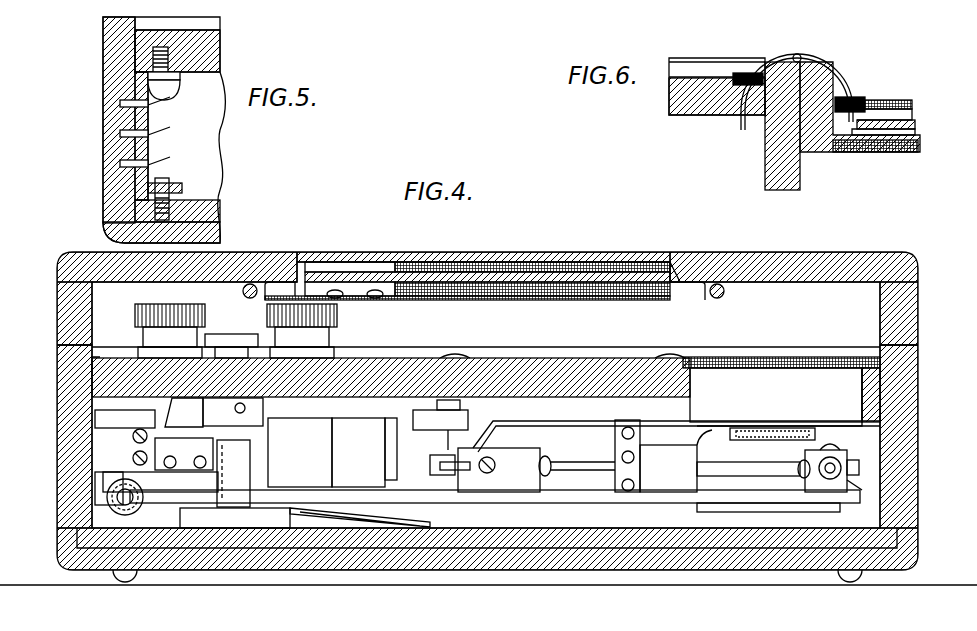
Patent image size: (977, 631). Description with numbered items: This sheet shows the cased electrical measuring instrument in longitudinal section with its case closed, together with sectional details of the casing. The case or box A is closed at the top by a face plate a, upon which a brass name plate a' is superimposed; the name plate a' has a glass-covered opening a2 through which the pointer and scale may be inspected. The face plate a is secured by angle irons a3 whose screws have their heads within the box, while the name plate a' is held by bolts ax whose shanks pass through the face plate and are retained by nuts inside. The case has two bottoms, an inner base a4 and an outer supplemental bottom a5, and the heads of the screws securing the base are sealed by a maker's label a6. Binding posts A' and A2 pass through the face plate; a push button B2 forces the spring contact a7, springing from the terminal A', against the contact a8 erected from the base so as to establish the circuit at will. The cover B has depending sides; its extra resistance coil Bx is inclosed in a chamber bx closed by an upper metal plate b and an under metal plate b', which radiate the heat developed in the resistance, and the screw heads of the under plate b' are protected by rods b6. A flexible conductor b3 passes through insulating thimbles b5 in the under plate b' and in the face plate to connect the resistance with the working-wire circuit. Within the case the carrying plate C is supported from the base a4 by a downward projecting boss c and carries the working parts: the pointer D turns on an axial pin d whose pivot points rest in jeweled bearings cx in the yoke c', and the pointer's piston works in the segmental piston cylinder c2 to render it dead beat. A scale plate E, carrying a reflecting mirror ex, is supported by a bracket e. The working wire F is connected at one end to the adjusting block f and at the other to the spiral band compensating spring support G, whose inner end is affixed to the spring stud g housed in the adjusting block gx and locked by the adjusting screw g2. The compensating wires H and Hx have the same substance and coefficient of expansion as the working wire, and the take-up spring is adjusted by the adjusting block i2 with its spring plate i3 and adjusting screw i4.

In FIG. 5, the case A is at (148, 130).
In FIG. 6, the case A is at (767, 126).
In FIG. 4, the case A is at (488, 457).
In FIG. 4, the binding post A' is at (153, 331).
In FIG. 4, the binding post A2 is at (340, 320).
In FIG. 6, the cover B is at (860, 122).
In FIG. 4, the cover B is at (62, 314).
In FIG. 4, the push button B2 is at (231, 336).
In FIG. 4, the extra resistance coil Bx is at (458, 262).
In FIG. 5, the face plate a is at (192, 58).
In FIG. 6, the face plate a is at (717, 101).
In FIG. 4, the face plate a is at (391, 358).
In FIG. 4, the name plate a' is at (582, 340).
In FIG. 4, the glass-covered opening a2 is at (793, 357).
In FIG. 5, the angle irons a3 is at (148, 147).
In FIG. 4, the angle irons a3 is at (160, 450).
In FIG. 5, the base a4 is at (222, 188).
In FIG. 4, the base a4 is at (316, 536).
In FIG. 5, the supplemental bottom a5 is at (222, 238).
In FIG. 4, the supplemental bottom a5 is at (376, 562).
In FIG. 5, the maker's label a6 is at (222, 220).
In FIG. 4, the maker's label a6 is at (440, 550).
In FIG. 4, the spring contact a7 is at (214, 412).
In FIG. 4, the contact a8 is at (255, 450).
In FIG. 4, the bolts ax is at (452, 357).
In FIG. 6, the upper plate b is at (875, 162).
In FIG. 4, the upper plate b is at (532, 251).
In FIG. 6, the under plate b' is at (886, 100).
In FIG. 6, the flexible conductor b3 is at (796, 42).
In FIG. 6, the insulating thimbles b5 is at (738, 70).
In FIG. 4, the rods b6 is at (243, 292).
In FIG. 6, the chamber bx is at (916, 134).
In FIG. 4, the chamber bx is at (592, 282).
In FIG. 4, the carrying plate C is at (72, 414).
In FIG. 4, the boss c is at (375, 516).
In FIG. 4, the needle housing c' is at (395, 449).
In FIG. 4, the segmental piston cylinder c2 is at (358, 452).
In FIG. 4, the jeweled bearings cx is at (428, 425).
In FIG. 4, the pointer D is at (731, 420).
In FIG. 4, the axial pin d is at (435, 471).
In FIG. 4, the scale plate E is at (831, 427).
In FIG. 4, the bracket e is at (700, 434).
In FIG. 4, the reflecting mirror ex is at (784, 428).
In FIG. 4, the working wire F is at (782, 462).
In FIG. 4, the adjusting block f is at (860, 488).
In FIG. 4, the compensating spring support G is at (78, 518).
In FIG. 4, the spring stud g is at (108, 500).
In FIG. 4, the adjusting screw g2 is at (125, 437).
In FIG. 4, the adjusting block gx is at (195, 478).
In FIG. 4, the compensating wire H is at (753, 461).
In FIG. 4, the compensating wire Hx is at (734, 476).
In FIG. 4, the adjusting block i2 is at (536, 470).
In FIG. 4, the spring plate i3 is at (456, 477).
In FIG. 4, the adjusting screw i4 is at (490, 458).